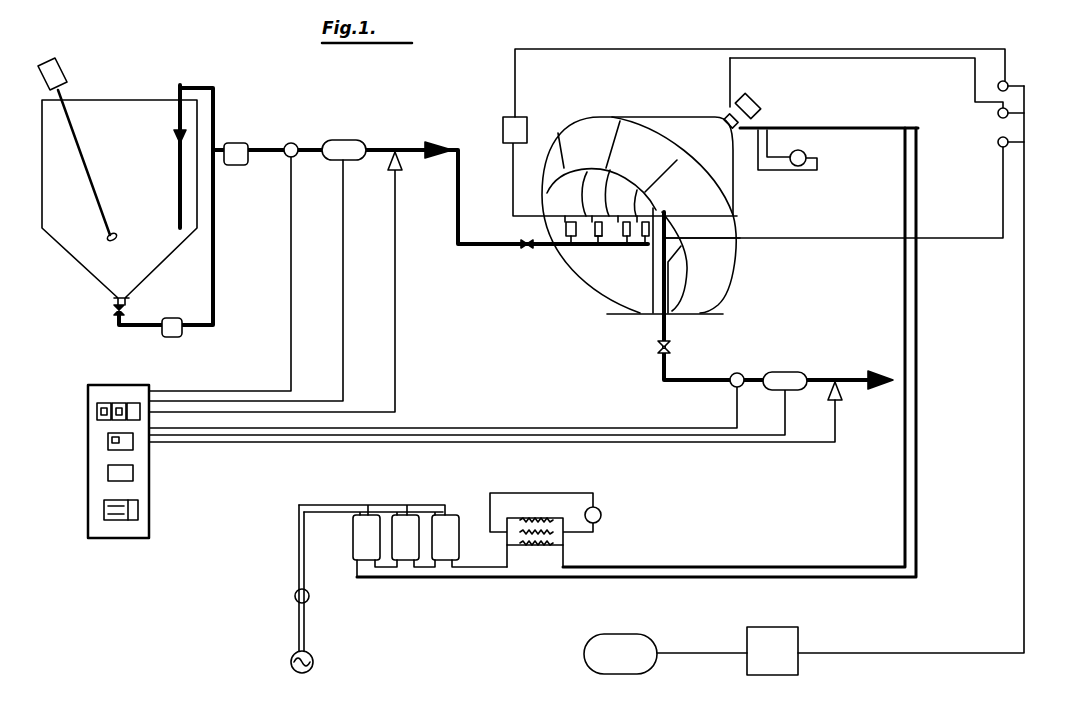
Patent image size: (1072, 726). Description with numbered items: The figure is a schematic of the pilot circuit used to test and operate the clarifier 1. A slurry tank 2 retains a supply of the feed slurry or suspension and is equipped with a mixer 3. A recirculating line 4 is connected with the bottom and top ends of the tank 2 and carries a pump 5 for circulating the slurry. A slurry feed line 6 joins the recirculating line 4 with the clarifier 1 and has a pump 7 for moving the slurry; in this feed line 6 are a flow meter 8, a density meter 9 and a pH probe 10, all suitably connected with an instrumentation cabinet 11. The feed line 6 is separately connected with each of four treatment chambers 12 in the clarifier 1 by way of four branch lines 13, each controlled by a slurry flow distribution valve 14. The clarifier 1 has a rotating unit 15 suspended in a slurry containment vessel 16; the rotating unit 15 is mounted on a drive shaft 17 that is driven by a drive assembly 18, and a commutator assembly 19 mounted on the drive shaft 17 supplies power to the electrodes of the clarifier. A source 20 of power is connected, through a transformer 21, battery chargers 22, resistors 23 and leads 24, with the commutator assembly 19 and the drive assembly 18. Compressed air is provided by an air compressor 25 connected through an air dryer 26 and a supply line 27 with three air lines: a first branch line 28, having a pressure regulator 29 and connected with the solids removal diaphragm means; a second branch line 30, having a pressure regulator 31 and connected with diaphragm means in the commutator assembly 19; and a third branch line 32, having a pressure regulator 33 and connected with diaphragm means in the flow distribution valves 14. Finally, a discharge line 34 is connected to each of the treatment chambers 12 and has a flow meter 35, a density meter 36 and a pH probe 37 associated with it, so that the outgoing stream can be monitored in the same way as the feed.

The clarifier 1 is at (742, 278).
The slurry tank 2 is at (78, 264).
The mixer 3 is at (64, 72).
The recirculating line 4 is at (218, 258).
The pump 5 is at (174, 337).
The slurry feed line 6 is at (388, 148).
The pump 7 is at (236, 145).
The flow meter 8 is at (294, 144).
The density meter 9 is at (344, 142).
The pH probe 10 is at (405, 165).
The instrumentation cabinet 11 is at (145, 494).
The treatment chambers 12 is at (578, 204).
The branch lines 13 is at (556, 248).
The slurry flow distribution valve 14 is at (562, 232).
The rotating unit 15 is at (738, 188).
The slurry containment vessel 16 is at (740, 230).
The drive shaft 17 is at (733, 108).
The drive assembly 18 is at (758, 102).
The commutator assembly 19 is at (724, 122).
The source of power 20 is at (314, 666).
The transformer 21 is at (309, 599).
The battery chargers 22 is at (460, 512).
The resistors 23 is at (540, 520).
The leads 24 is at (668, 570).
The air compressor 25 is at (626, 676).
The air dryer 26 is at (786, 680).
The supply line 27 is at (872, 660).
The first branch line 28 is at (1002, 198).
The pressure regulator 29 is at (998, 146).
The second branch line 30 is at (972, 92).
The pressure regulator 31 is at (998, 117).
The third branch line 32 is at (988, 47).
The pressure regulator 33 is at (1008, 82).
The discharge line 34 is at (694, 378).
The flow meter 35 is at (742, 372).
The density meter 36 is at (788, 372).
The pH probe 37 is at (845, 392).